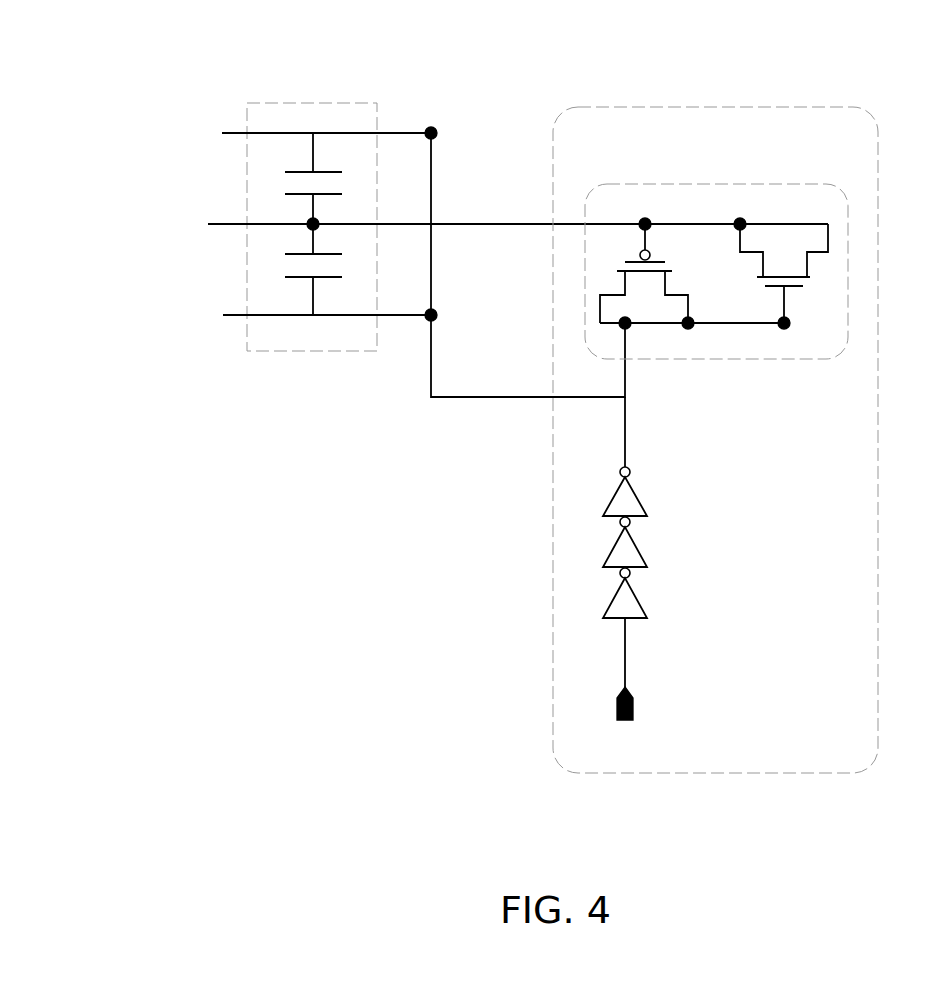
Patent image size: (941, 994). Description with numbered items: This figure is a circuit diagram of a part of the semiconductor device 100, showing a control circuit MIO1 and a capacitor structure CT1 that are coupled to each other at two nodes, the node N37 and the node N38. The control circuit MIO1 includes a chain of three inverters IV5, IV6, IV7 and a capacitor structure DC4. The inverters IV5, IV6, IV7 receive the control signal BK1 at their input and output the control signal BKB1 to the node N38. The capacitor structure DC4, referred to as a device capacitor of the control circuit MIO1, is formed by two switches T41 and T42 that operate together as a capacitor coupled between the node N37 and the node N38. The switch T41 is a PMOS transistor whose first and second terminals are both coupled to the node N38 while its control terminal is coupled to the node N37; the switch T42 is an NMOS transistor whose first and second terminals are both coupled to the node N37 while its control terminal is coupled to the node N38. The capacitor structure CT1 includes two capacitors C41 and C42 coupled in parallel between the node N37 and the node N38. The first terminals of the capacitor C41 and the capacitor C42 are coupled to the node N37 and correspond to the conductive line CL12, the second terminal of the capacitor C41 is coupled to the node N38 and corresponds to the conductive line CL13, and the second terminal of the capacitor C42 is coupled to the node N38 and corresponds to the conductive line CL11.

The semiconductor device 100 is at (146, 87).
The capacitor structure CT1 is at (310, 102).
The conductive line CL13 is at (223, 133).
The capacitor C41 is at (310, 172).
The node N37 is at (312, 222).
The conductive line CL12 is at (225, 224).
The capacitor C42 is at (290, 254).
The conductive line CL11 is at (223, 315).
The node N38 is at (525, 262).
The capacitor structure DC4 is at (661, 183).
The control circuit MIO1 is at (764, 107).
The switch T41 is at (692, 273).
The switch T42 is at (790, 273).
The control signal BKB1 is at (625, 438).
The inverter IV7 is at (613, 497).
The inverter IV6 is at (613, 548).
The inverter IV5 is at (613, 598).
The control signal BK1 is at (622, 690).